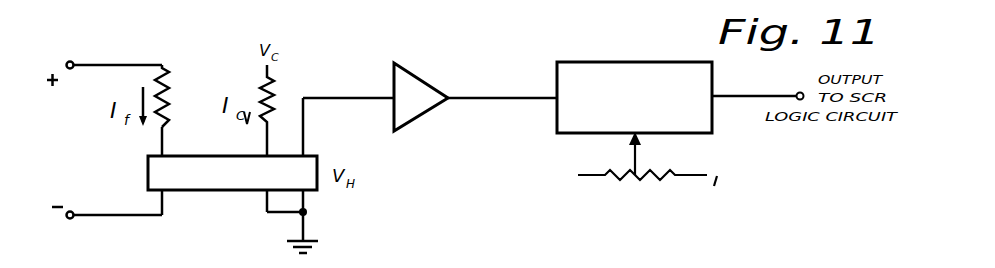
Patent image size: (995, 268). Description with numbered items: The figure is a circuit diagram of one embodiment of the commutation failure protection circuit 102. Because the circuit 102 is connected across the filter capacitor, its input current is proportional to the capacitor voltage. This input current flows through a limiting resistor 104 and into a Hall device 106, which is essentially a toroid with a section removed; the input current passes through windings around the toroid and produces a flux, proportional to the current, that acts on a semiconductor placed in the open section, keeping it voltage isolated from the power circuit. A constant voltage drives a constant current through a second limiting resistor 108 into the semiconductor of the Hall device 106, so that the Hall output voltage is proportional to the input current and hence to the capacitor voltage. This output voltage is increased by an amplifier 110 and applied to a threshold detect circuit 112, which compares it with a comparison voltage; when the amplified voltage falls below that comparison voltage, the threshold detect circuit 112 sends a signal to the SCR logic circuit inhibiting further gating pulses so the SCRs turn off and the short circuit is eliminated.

The commutation failure protection circuit 102 is at (510, 87).
The limiting resistor 104 is at (168, 100).
The Hall device 106 is at (227, 192).
The limiting resistor 108 is at (270, 87).
The amplifier 110 is at (417, 73).
The threshold detect circuit 112 is at (696, 139).